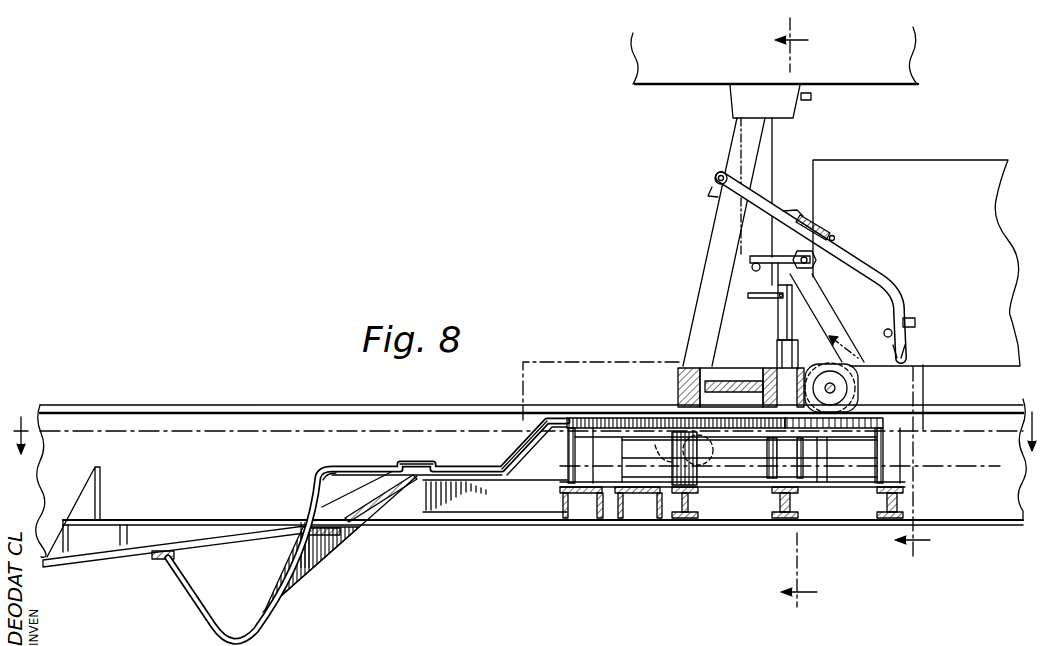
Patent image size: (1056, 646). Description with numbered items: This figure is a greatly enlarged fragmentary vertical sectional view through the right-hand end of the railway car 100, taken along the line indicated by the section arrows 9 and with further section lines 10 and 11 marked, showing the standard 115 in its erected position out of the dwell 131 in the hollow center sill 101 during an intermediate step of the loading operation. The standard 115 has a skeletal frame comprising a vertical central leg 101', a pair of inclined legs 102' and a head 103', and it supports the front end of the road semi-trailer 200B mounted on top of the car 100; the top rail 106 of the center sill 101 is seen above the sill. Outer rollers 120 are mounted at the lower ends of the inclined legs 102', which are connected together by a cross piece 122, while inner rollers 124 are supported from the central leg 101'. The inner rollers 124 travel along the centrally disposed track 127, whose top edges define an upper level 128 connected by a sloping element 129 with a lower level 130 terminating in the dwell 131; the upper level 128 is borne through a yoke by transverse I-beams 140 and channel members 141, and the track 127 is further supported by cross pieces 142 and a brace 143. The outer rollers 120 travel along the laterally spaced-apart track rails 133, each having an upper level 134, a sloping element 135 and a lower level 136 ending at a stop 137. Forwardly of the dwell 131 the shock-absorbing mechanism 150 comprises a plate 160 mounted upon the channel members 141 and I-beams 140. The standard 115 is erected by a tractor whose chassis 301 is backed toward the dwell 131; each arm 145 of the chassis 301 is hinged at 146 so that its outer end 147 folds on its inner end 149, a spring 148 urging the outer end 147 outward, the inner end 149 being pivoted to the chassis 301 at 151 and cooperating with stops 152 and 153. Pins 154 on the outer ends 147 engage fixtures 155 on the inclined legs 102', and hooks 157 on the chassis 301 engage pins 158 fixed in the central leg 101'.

The section line 9- 9 is at (526, 424).
The section line 10- 10 is at (879, 442).
The section line 11- 11 is at (802, 306).
The railway car 100 is at (474, 532).
The hollow center sill 101 is at (531, 448).
The vertical central leg 101' is at (785, 187).
The inclined legs 102' is at (711, 242).
The head 103' is at (739, 103).
The top rail 106 is at (240, 398).
The standard 115 is at (716, 144).
The rollers 120 is at (662, 452).
The cross piece 122 is at (684, 367).
The inner rollers 124 is at (858, 370).
The track 127 is at (540, 414).
The upper level 128 is at (601, 417).
The sloping element 129 is at (531, 447).
The lower level 130 is at (359, 467).
The dwell 131 is at (221, 630).
The track rails 133 is at (426, 456).
The upper level 134 is at (530, 456).
The sloping element 135 is at (362, 510).
The lower level 136 is at (201, 518).
The stop 137 is at (103, 493).
The transverse I-beams 140 is at (690, 503).
The channel members 141 is at (602, 508).
The cross pieces 142 is at (313, 562).
The brace 143 is at (338, 533).
The arms 145 is at (861, 260).
The hinge 146 is at (818, 213).
The outer end 147 is at (774, 205).
The spring 148 is at (830, 233).
The inner end 149 is at (898, 355).
The shock-absorbing mechanism 150 is at (751, 452).
The pivot 151 is at (897, 337).
The stop 152 is at (915, 322).
The stop 153 is at (873, 352).
The pins 154 is at (713, 175).
The fixtures 155 is at (715, 195).
The hooks 157 is at (742, 258).
The pins 158 is at (740, 270).
The plate 160 is at (741, 464).
The road semi-trailer 200B is at (919, 63).
The chassis 301 is at (982, 140).